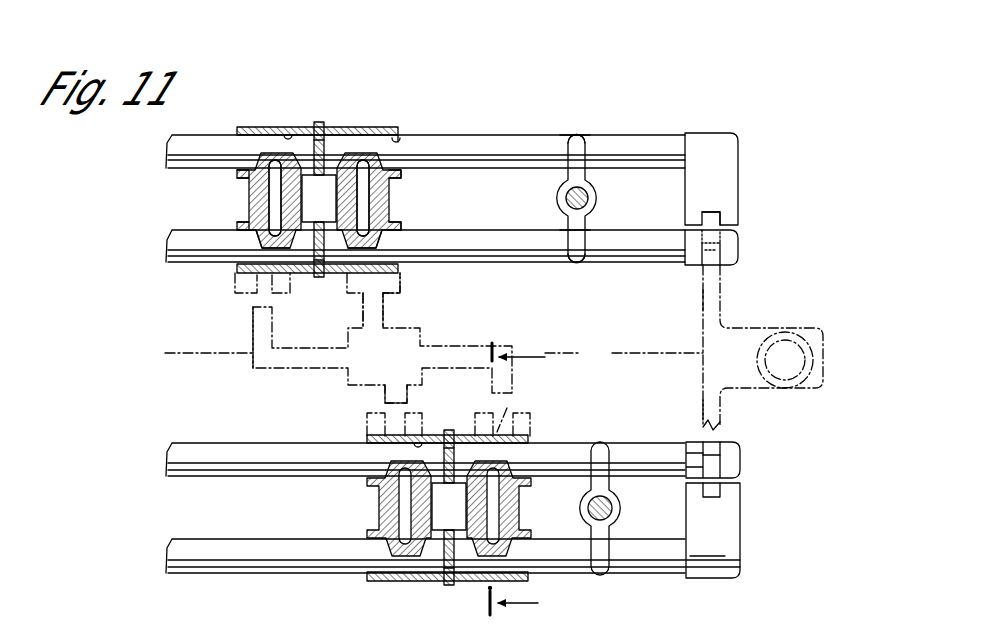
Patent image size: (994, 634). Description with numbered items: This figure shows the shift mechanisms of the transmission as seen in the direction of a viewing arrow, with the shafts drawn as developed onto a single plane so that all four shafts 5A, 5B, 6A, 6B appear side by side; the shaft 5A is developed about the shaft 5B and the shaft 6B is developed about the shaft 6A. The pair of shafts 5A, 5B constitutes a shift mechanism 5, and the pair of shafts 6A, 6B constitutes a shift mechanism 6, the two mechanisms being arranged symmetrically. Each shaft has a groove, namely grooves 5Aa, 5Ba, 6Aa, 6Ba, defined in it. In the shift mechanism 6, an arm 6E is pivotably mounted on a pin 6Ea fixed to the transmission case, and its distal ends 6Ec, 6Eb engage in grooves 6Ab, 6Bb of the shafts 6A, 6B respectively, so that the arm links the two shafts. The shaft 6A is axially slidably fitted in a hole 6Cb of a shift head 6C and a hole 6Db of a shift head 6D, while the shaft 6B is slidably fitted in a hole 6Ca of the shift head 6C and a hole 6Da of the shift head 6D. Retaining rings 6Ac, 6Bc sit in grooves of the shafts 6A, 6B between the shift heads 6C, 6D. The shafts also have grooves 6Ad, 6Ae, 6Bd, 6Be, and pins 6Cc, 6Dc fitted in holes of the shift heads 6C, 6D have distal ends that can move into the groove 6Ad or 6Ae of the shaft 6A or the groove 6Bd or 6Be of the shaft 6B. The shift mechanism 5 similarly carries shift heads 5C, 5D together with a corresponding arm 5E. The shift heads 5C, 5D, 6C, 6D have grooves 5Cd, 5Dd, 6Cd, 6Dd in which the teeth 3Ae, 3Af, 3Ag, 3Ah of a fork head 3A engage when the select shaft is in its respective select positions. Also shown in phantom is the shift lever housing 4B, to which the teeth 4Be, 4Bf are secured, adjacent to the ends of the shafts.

The shift mechanism 6 is at (158, 207).
The shaft 6A is at (158, 260).
The shaft 6B is at (166, 149).
The shift head 6C is at (390, 124).
The shift head 6D is at (259, 125).
The arm 6E is at (602, 195).
The groove 6Aa is at (712, 254).
The groove 6Ab is at (566, 242).
The retaining ring 6Ac is at (317, 278).
The groove 6Ad is at (399, 223).
The groove 6Ae is at (262, 246).
The groove 6Ba is at (721, 218).
The groove 6Bb is at (566, 158).
The retaining ring 6Bc is at (320, 121).
The groove 6Bd is at (400, 186).
The groove 6Be is at (249, 173).
The hole 6Ca is at (401, 140).
The hole 6Cb is at (393, 240).
The pin 6Cc is at (378, 198).
The groove 6Cd is at (372, 335).
The hole 6Da is at (291, 133).
The hole 6Db is at (254, 233).
The pin 6Dc is at (274, 194).
The groove 6Dd is at (265, 290).
The pin 6Ea is at (568, 196).
The distal end 6Eb is at (584, 152).
The distal end 6Ec is at (584, 263).
The fork head 3A is at (424, 341).
The tooth 3Ae is at (511, 378).
The tooth 3Af is at (406, 399).
The tooth 3Ag is at (378, 290).
The tooth 3Ah is at (262, 322).
The shift lever housing 4B is at (828, 343).
The tooth 4Be is at (717, 408).
The tooth 4Bf is at (717, 304).
The shift mechanism 5 is at (191, 499).
The shaft 5A is at (188, 575).
The shaft 5B is at (168, 440).
The shift head 5C is at (525, 505).
The shift head 5D is at (376, 509).
The tie link of assembly 5 5E is at (623, 515).
The groove 5Aa is at (720, 496).
The groove 5Ba is at (720, 463).
The groove 5Cd is at (507, 408).
The groove 5Dd is at (385, 434).